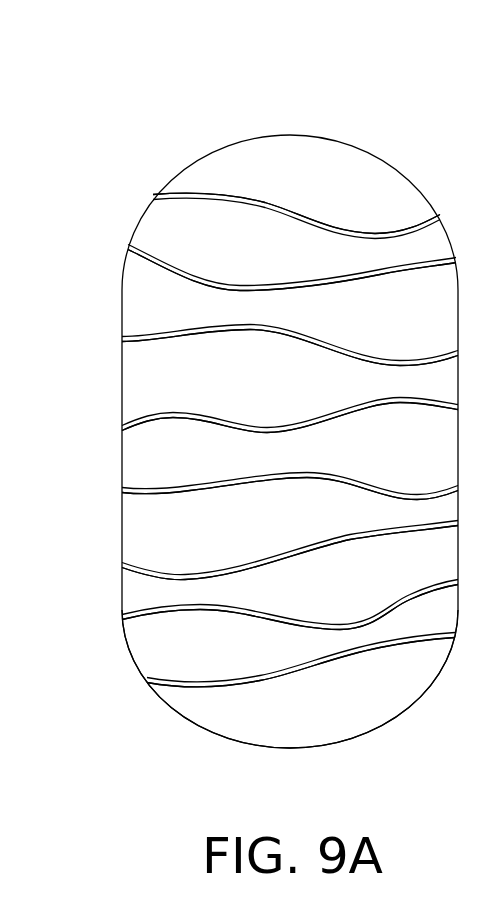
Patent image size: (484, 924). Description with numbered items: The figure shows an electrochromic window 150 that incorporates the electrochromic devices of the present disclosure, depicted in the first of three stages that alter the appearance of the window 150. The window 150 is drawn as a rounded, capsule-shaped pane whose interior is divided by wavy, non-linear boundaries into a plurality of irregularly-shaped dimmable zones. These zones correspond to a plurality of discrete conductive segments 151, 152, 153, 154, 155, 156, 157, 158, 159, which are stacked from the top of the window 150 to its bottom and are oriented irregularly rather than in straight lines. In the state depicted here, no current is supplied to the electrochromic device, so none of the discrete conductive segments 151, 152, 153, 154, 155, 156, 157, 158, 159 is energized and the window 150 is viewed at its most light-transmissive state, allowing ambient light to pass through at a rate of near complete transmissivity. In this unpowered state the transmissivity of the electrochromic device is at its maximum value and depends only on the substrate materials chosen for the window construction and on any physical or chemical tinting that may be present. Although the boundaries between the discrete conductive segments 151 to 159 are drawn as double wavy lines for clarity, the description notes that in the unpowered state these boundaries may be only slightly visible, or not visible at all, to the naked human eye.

The window 150 is at (348, 125).
The discrete conductive segment 151 is at (220, 174).
The discrete conductive segment 152 is at (162, 225).
The discrete conductive segment 153 is at (148, 300).
The discrete conductive segment 154 is at (140, 390).
The discrete conductive segment 155 is at (133, 462).
The discrete conductive segment 156 is at (140, 530).
The discrete conductive segment 157 is at (135, 592).
The discrete conductive segment 158 is at (143, 650).
The discrete conductive segment 159 is at (195, 712).